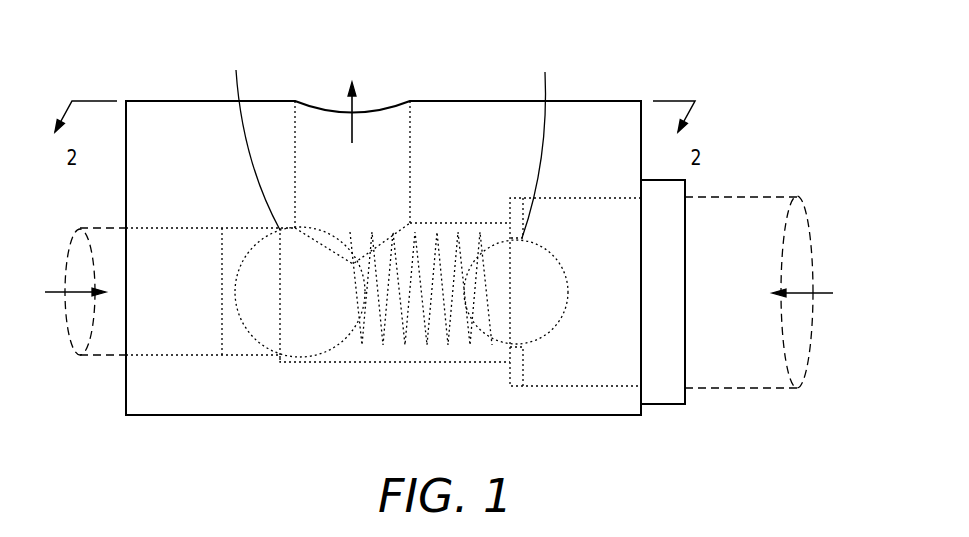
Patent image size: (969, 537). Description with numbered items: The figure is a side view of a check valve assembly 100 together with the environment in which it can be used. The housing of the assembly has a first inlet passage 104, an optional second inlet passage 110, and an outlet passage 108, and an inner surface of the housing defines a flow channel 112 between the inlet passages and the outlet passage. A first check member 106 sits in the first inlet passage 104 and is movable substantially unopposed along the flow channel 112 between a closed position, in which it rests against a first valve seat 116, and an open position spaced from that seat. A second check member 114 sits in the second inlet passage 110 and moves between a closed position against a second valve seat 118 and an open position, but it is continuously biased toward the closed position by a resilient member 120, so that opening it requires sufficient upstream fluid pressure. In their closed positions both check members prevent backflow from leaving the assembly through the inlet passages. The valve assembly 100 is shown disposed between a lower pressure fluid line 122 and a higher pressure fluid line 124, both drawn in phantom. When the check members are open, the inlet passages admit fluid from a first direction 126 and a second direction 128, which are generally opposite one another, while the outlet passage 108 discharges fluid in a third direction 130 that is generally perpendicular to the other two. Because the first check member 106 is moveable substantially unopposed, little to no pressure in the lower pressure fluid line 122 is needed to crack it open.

The check valve assembly 100 is at (745, 42).
The first inlet passage 104 is at (598, 386).
The first check member 106 is at (557, 291).
The outlet passage 108 is at (388, 116).
The second inlet passage 110 is at (163, 352).
The flow channel 112 is at (373, 348).
The second check member 114 is at (236, 290).
The first valve seat 116 is at (541, 140).
The second valve seat 118 is at (248, 135).
The resilient member 120 is at (468, 328).
The lower pressure fluid line 122 is at (744, 382).
The higher pressure fluid line 124 is at (92, 350).
The first direction 126 is at (821, 293).
The second direction 128 is at (57, 292).
The third direction 130 is at (350, 98).